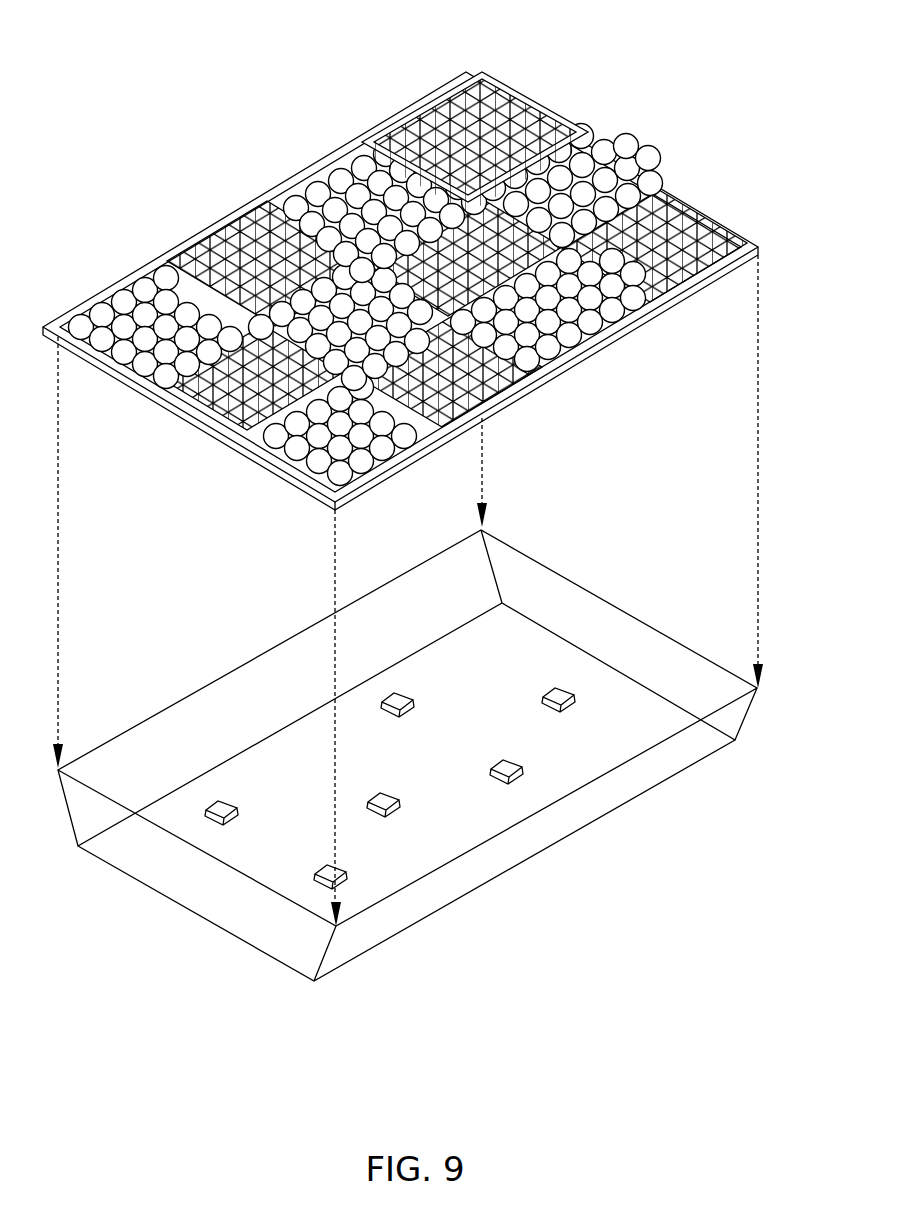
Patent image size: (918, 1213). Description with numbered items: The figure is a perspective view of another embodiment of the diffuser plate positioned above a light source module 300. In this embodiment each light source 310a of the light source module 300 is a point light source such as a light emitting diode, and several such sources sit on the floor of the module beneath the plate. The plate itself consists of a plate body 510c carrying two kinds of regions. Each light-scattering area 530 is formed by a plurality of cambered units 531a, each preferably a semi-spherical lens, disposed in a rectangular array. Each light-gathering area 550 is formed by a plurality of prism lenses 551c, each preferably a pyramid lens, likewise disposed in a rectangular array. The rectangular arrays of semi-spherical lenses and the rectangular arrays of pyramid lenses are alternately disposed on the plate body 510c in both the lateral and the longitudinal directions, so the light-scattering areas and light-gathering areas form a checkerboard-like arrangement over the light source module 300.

The light source module 300 is at (660, 763).
The light source 310a is at (558, 690).
The light-scattering area 530 is at (127, 277).
The plate body 510c is at (187, 407).
The cambered unit 531a is at (297, 210).
The prism lens 551c is at (667, 197).
The light-gathering area 550 is at (430, 98).